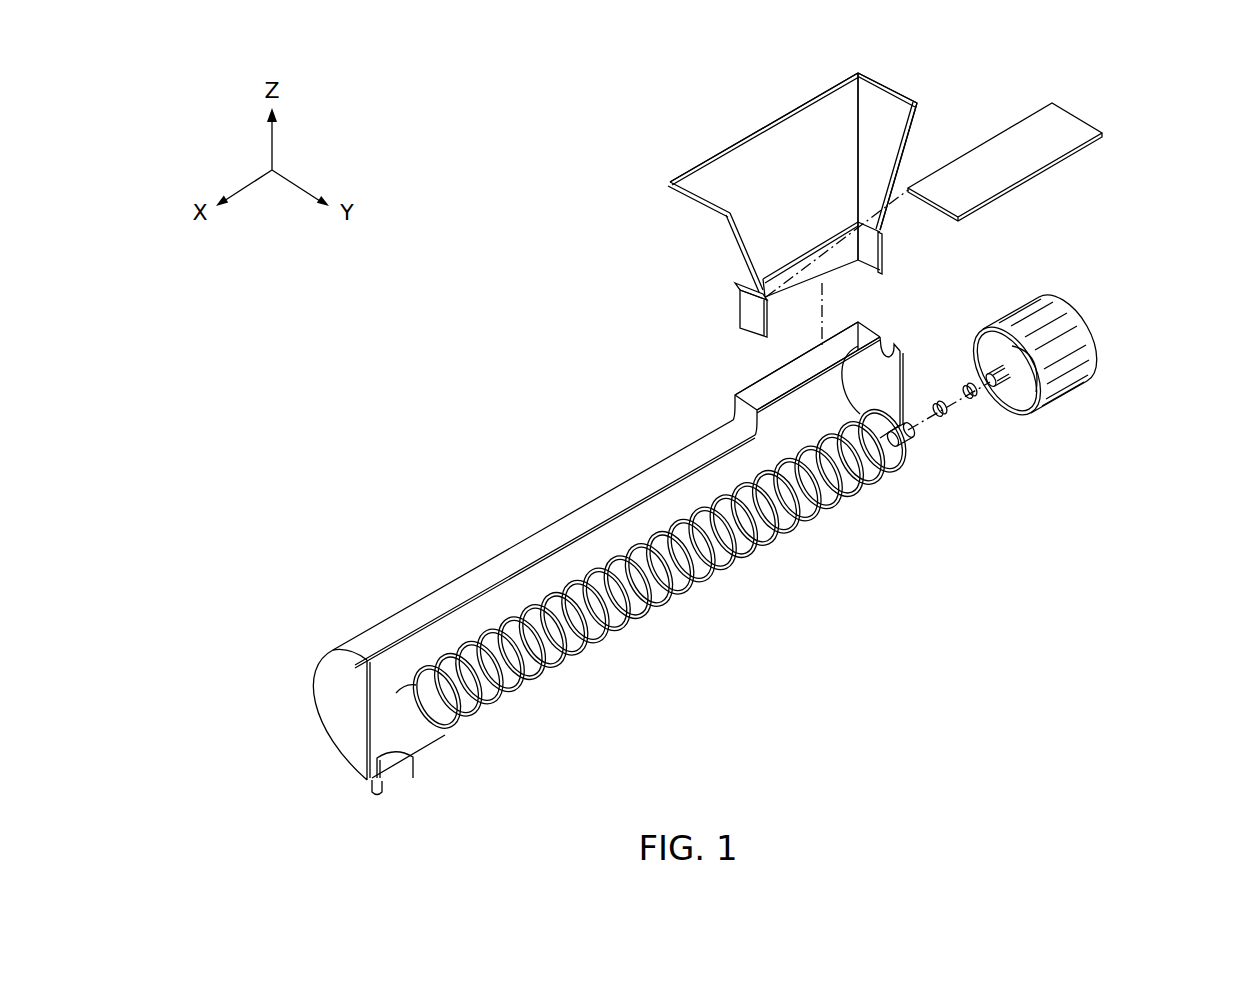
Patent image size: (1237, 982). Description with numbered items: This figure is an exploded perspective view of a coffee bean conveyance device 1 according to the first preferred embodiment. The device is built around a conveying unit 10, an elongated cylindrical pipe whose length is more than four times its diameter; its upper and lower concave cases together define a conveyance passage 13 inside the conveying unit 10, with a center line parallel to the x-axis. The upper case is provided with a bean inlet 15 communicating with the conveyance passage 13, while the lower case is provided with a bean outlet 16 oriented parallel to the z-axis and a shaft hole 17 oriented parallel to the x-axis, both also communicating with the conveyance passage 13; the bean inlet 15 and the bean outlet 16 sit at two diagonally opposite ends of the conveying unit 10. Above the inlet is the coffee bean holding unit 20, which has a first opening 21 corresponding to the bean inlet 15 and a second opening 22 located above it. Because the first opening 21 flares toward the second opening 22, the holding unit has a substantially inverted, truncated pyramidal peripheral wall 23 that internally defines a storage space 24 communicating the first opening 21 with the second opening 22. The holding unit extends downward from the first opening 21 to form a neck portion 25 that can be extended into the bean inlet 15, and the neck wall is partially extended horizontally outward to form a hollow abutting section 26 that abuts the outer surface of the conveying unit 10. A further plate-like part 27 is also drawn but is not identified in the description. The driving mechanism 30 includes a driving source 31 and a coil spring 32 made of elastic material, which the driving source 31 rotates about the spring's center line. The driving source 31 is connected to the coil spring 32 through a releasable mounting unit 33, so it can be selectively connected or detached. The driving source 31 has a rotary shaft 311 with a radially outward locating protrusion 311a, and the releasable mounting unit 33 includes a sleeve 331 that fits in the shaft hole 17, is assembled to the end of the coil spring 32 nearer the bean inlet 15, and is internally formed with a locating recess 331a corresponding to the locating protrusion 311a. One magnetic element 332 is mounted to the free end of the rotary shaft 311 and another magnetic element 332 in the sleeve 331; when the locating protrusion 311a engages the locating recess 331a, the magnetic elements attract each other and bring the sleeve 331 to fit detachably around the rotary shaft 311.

The coffee bean conveyance device 1 is at (393, 326).
The conveying unit 10 is at (550, 466).
The conveyance passage 13 is at (470, 625).
The bean inlet 15 is at (760, 388).
The bean outlet 16 is at (400, 779).
The shaft hole 17 is at (888, 418).
The coffee bean holding unit 20 is at (646, 134).
The first opening 21 is at (812, 250).
The second opening 22 is at (885, 84).
The peripheral wall 23 is at (902, 140).
The storage space 24 is at (789, 142).
The neck portion 25 is at (750, 307).
The abutting section 26 is at (735, 289).
The cover plate 27 is at (1063, 122).
The driving mechanism 30 is at (1000, 278).
The driving source 31 is at (1083, 333).
The rotary shaft 311 is at (1002, 375).
The locating protrusion 311a is at (1037, 363).
The coil spring 32 is at (675, 612).
The releasable mounting unit 33 is at (1042, 543).
The sleeve 331 is at (901, 445).
The locating recess 331a is at (940, 420).
The magnetic element 332 is at (970, 402).